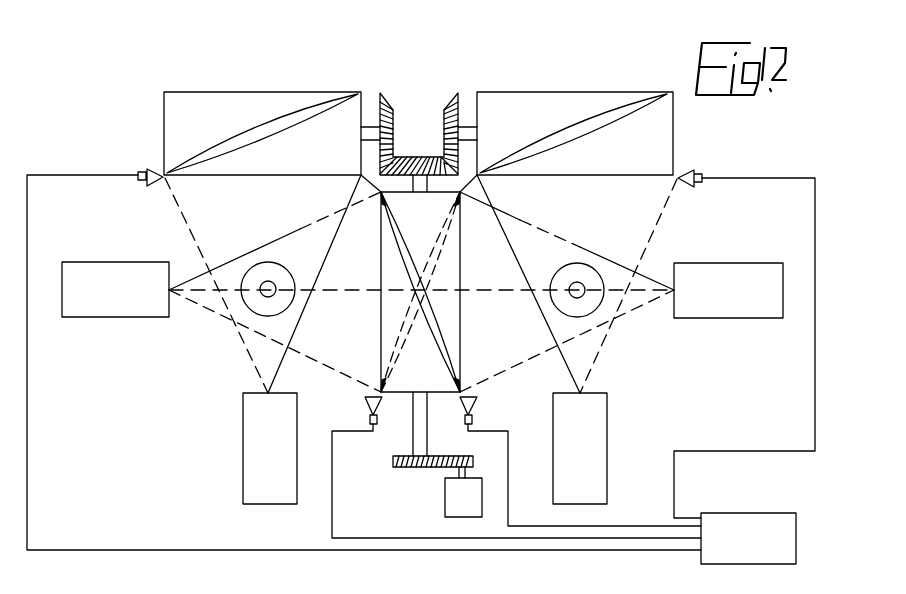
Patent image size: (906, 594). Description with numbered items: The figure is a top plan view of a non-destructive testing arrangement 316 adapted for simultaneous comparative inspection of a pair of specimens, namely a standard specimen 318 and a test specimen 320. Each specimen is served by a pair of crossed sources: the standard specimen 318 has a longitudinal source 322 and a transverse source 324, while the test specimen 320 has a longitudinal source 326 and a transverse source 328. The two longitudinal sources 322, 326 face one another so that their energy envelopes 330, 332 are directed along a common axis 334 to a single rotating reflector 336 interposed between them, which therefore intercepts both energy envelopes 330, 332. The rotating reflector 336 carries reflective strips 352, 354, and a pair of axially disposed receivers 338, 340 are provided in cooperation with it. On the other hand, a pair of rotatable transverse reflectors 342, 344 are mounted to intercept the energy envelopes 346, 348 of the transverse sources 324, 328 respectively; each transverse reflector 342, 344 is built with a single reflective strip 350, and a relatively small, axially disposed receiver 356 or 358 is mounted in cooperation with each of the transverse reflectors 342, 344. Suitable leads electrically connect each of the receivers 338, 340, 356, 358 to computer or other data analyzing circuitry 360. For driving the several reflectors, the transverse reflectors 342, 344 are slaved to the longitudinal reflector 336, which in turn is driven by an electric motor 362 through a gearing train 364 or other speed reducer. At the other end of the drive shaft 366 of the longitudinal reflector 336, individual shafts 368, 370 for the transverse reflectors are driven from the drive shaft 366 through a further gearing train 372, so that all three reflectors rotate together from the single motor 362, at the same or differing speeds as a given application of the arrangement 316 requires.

The non-destructive testing arrangement 316 is at (737, 205).
The standard specimen 318 is at (272, 268).
The test specimen 320 is at (569, 267).
The longitudinal source 322 is at (93, 313).
The transverse source 324 is at (243, 421).
The longitudinal source 326 is at (712, 313).
The transverse source 328 is at (603, 415).
The energy envelope 330 is at (304, 350).
The energy envelope 332 is at (620, 318).
The common axis 334 is at (630, 272).
The rotating reflector 336 is at (461, 338).
The axially disposed receiver 338 is at (366, 403).
The axially disposed receiver 340 is at (476, 403).
The transverse rotatable reflector 342 is at (281, 93).
The transverse rotatable reflector 344 is at (519, 93).
The energy envelope 346 is at (306, 306).
The energy envelope 348 is at (657, 210).
The reflective strip 350 is at (255, 138).
The reflective strip 352 is at (432, 346).
The reflective strip 354 is at (447, 243).
The axially disposed receiver 356 is at (147, 171).
The axially disposed receiver 358 is at (688, 172).
The data analyzing circuitry 360 is at (736, 518).
The electric motor 362 is at (450, 506).
The gearing train 364 is at (434, 470).
The drive shaft 366 is at (413, 184).
The individual shaft 368 is at (370, 128).
The individual shaft 370 is at (467, 128).
The gearing train 372 is at (415, 160).